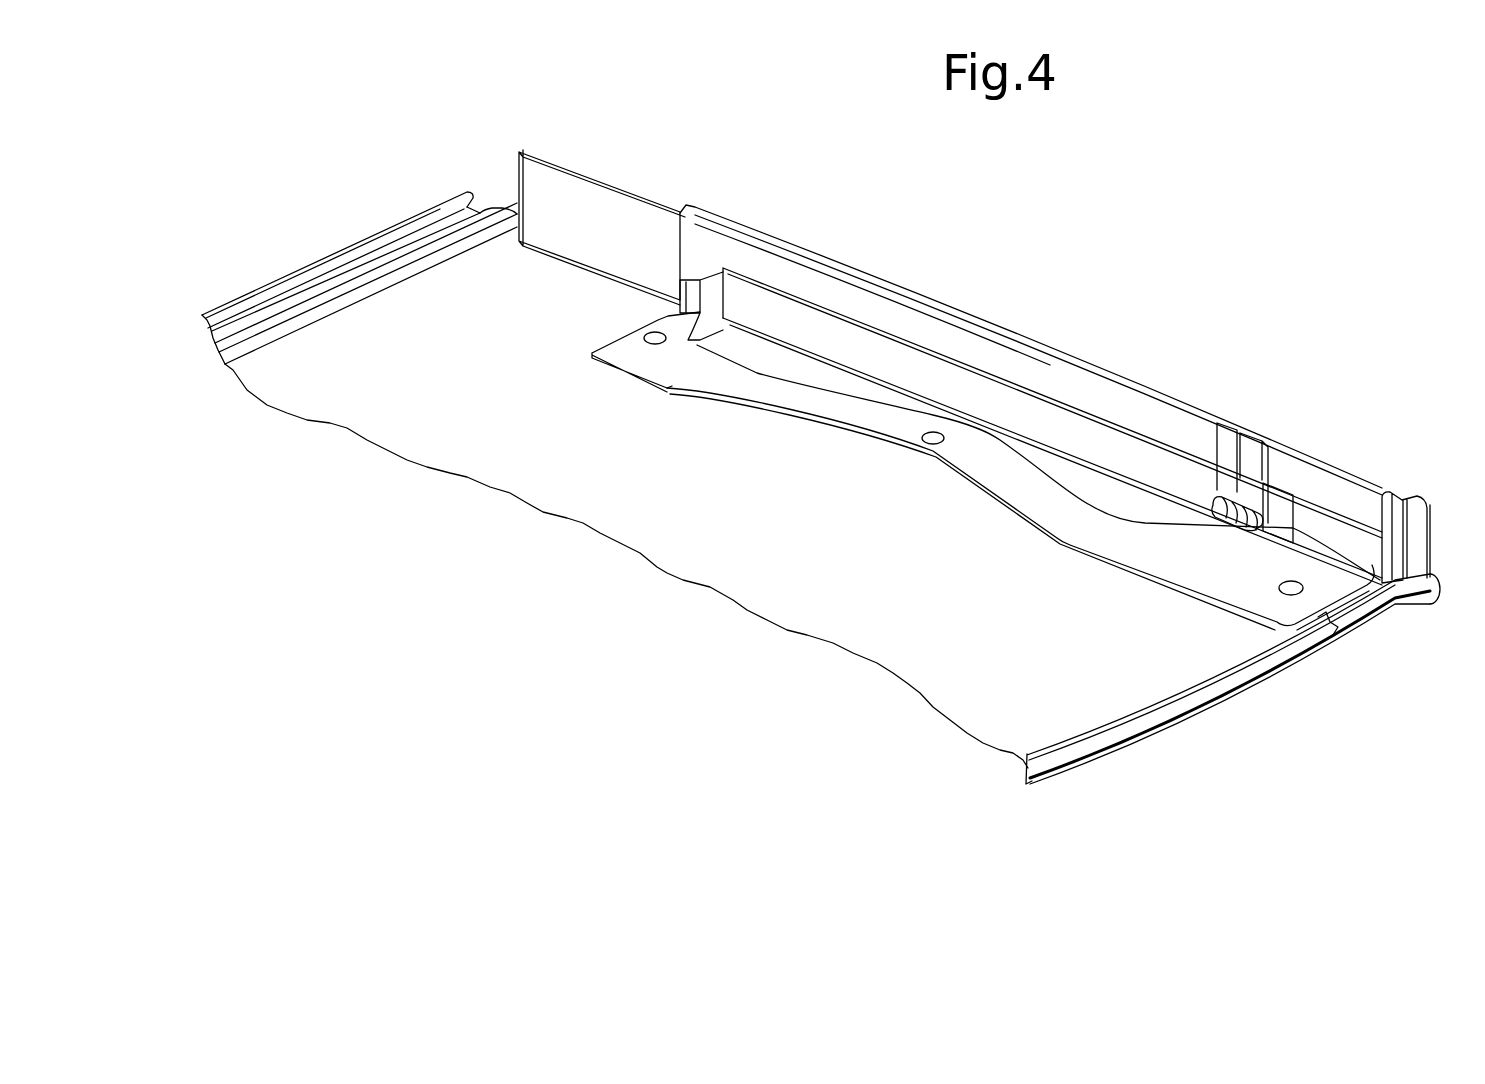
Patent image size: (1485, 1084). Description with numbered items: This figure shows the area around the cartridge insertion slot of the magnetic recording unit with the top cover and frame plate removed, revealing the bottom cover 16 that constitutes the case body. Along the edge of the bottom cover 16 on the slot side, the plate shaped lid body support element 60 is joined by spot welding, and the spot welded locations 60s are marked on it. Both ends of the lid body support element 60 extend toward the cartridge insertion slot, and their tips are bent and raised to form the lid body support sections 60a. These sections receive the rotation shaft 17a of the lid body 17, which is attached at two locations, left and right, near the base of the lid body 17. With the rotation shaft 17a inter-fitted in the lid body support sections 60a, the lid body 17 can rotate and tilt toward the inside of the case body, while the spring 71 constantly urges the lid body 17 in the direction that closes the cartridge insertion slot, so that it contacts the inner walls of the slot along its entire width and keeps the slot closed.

The bottom cover 16 is at (821, 493).
The lid body 17 is at (643, 222).
The rotation shaft 17a is at (1368, 582).
The lid body support element 60 is at (930, 539).
The lid body support section 60a is at (640, 287).
The spot welded location 60s is at (925, 442).
The spring 71 is at (1228, 512).